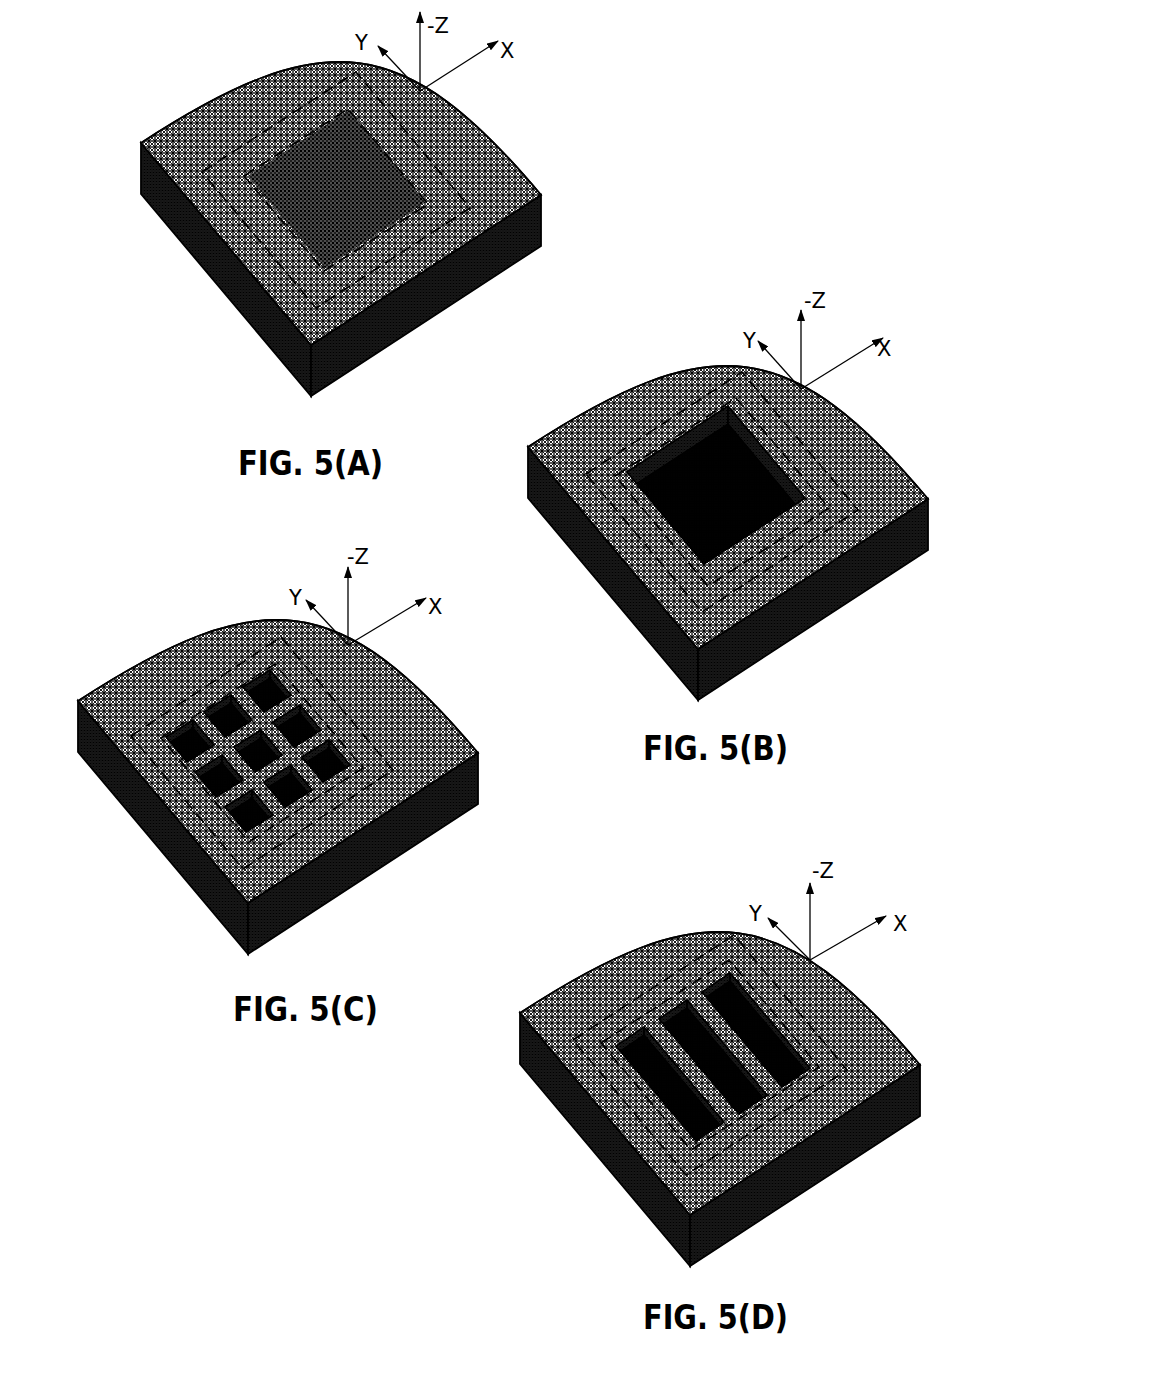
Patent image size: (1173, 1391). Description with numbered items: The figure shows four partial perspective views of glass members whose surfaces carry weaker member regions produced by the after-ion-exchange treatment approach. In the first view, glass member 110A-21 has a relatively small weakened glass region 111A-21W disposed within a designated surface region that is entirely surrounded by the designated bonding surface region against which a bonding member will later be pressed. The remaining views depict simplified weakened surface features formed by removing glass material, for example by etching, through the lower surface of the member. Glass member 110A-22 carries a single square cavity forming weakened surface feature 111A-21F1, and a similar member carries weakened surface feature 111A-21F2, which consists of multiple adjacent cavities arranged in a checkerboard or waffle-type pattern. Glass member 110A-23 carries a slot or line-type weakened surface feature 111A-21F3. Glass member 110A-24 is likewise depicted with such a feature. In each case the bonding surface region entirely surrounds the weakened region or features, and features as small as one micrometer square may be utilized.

The glass member 110A-21 is at (497, 107).
The glass member 110A-22 is at (880, 405).
The glass member 110A-23 is at (248, 615).
The substrate with slot recesses 110A-24 is at (876, 978).
The weakened glass region 111A-21W is at (332, 158).
The weakened surface feature 111A-21F1 is at (712, 456).
The weakened surface feature 111A-21F2 is at (247, 735).
The weakened surface feature 111A-21F3 is at (657, 1082).